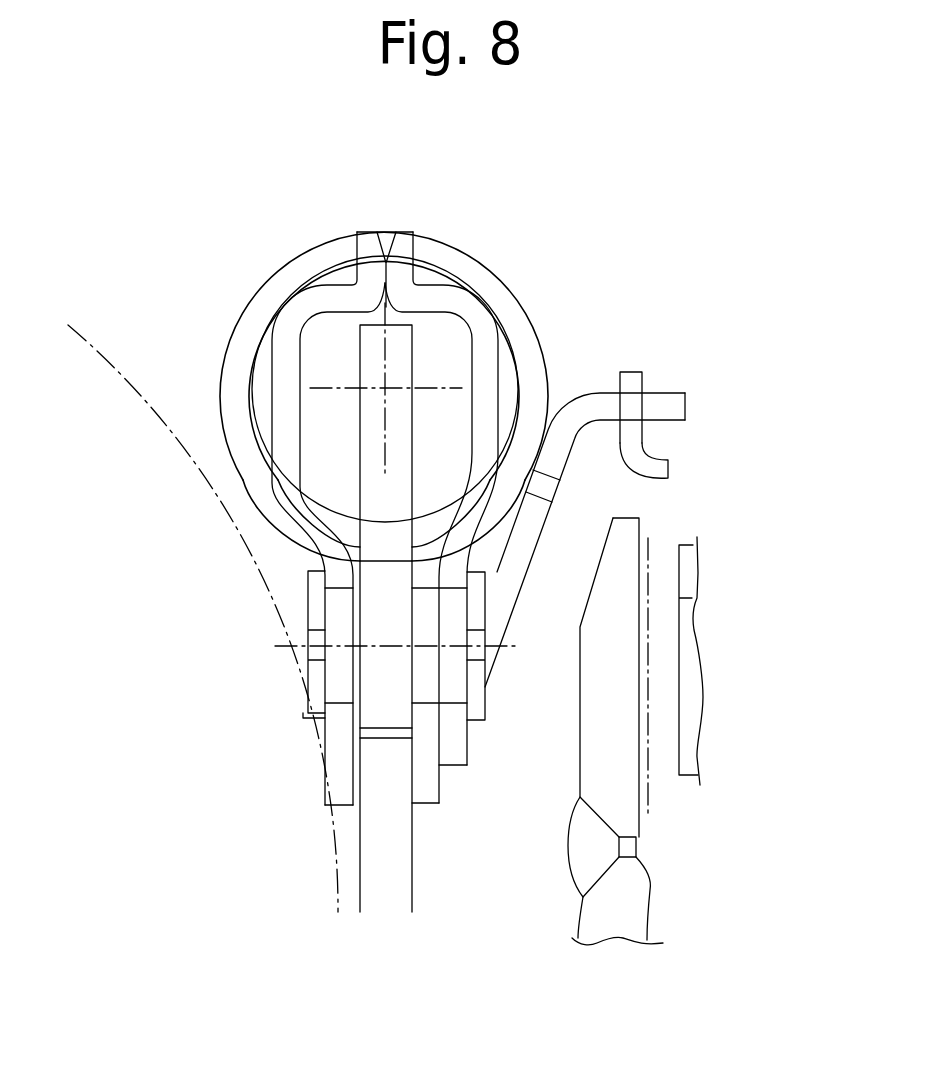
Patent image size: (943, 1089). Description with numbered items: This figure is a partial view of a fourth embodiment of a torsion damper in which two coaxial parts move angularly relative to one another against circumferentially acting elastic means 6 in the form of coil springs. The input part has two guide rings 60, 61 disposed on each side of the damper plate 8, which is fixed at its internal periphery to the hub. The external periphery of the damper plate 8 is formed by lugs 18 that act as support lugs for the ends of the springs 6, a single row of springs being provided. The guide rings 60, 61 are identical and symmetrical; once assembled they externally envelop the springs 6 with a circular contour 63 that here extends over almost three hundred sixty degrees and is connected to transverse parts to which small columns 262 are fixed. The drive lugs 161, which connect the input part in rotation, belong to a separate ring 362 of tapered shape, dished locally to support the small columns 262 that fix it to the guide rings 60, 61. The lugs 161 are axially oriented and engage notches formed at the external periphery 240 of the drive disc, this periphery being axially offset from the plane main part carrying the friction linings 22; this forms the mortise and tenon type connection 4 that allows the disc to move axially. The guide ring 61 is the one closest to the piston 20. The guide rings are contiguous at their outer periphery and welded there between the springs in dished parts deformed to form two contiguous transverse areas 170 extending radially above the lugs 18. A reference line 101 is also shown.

The mortise and tenon type connection 4 is at (672, 371).
The circumferentially acting elastic means 6 is at (372, 485).
The damper plate 8 is at (383, 853).
The lugs 18 is at (302, 507).
The piston 20 is at (632, 902).
The friction linings 22 is at (695, 700).
The guide washer 60 is at (262, 275).
The guide ring 61 is at (506, 275).
The circular contour 63 is at (457, 249).
The reference line 101 is at (80, 342).
The drive lugs 161 is at (602, 378).
The contiguous transverse areas 170 is at (360, 232).
The external periphery 240 is at (650, 448).
The small columns 262 is at (318, 687).
The ring 362 is at (530, 560).